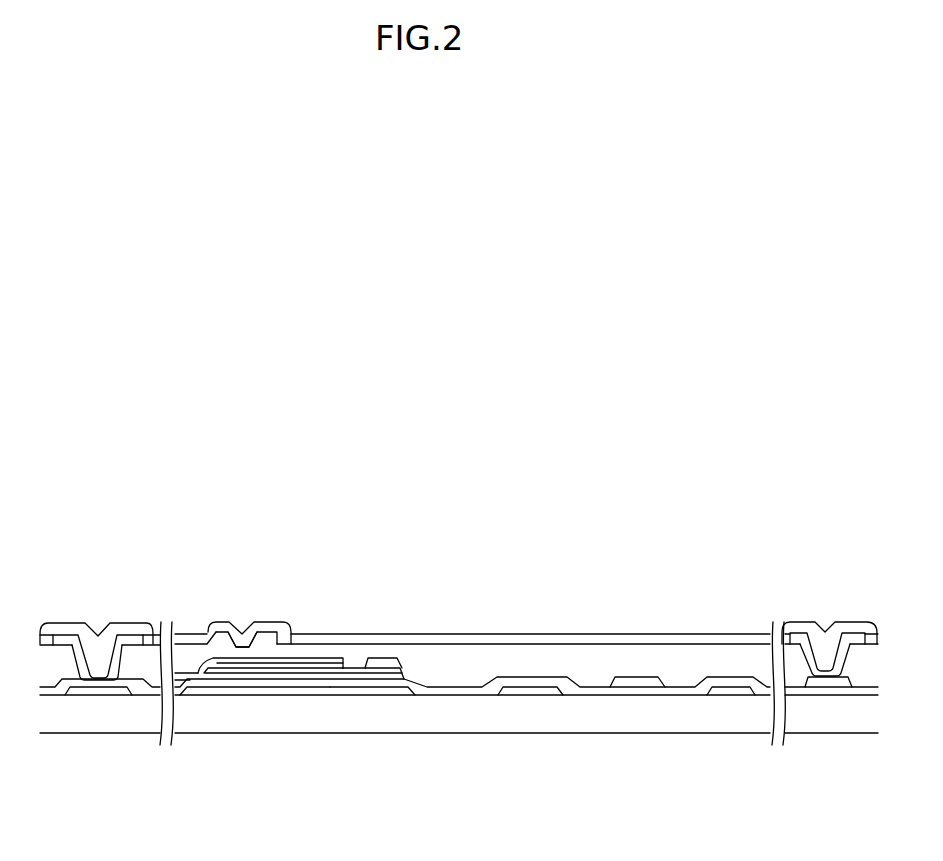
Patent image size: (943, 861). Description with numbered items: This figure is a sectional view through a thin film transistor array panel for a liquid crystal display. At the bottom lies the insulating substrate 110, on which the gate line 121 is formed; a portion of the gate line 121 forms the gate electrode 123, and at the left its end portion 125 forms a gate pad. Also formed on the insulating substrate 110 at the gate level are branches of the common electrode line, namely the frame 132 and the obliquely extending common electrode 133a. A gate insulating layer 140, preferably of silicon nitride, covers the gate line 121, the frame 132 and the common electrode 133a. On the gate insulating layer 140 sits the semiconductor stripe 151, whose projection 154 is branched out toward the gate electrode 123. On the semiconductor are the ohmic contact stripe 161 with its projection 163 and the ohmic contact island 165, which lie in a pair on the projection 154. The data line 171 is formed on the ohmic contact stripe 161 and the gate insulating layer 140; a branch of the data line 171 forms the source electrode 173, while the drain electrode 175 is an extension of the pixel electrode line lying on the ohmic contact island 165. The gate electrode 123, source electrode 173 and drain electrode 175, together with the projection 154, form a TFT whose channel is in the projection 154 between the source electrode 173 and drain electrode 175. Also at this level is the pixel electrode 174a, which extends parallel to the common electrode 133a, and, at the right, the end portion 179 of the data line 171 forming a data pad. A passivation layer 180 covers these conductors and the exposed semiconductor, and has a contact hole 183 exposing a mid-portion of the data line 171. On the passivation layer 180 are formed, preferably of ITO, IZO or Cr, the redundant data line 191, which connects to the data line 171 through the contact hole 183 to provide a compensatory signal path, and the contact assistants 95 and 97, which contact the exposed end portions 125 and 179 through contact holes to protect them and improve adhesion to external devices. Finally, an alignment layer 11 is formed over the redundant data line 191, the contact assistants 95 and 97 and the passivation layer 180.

The alignment layer 11 is at (650, 634).
The contact assistant 95 is at (65, 630).
The contact assistant 97 is at (803, 625).
The insulating substrate 110 is at (420, 733).
The gate line 121 is at (253, 688).
The gate electrode 123 is at (372, 693).
The end portion of gate line 125 is at (85, 695).
The frame 132 is at (530, 695).
The common electrode 133a is at (720, 695).
The gate insulating layer 140 is at (598, 688).
The semiconductor stripe 151 is at (218, 681).
The projection of semiconductor stripe 154 is at (343, 682).
The ohmic contact stripe 161 is at (289, 662).
The projection of ohmic contact stripe 163 is at (335, 662).
The ohmic contact island 165 is at (415, 668).
The data line 171 is at (202, 632).
The source electrode 173 is at (343, 658).
The pixel electrode 174a is at (642, 680).
The drain electrode 175 is at (385, 658).
The end portion of data line 179 is at (822, 688).
The passivation layer 180 is at (577, 643).
The contact hole 183 is at (242, 622).
The redundant data line 191 is at (217, 630).